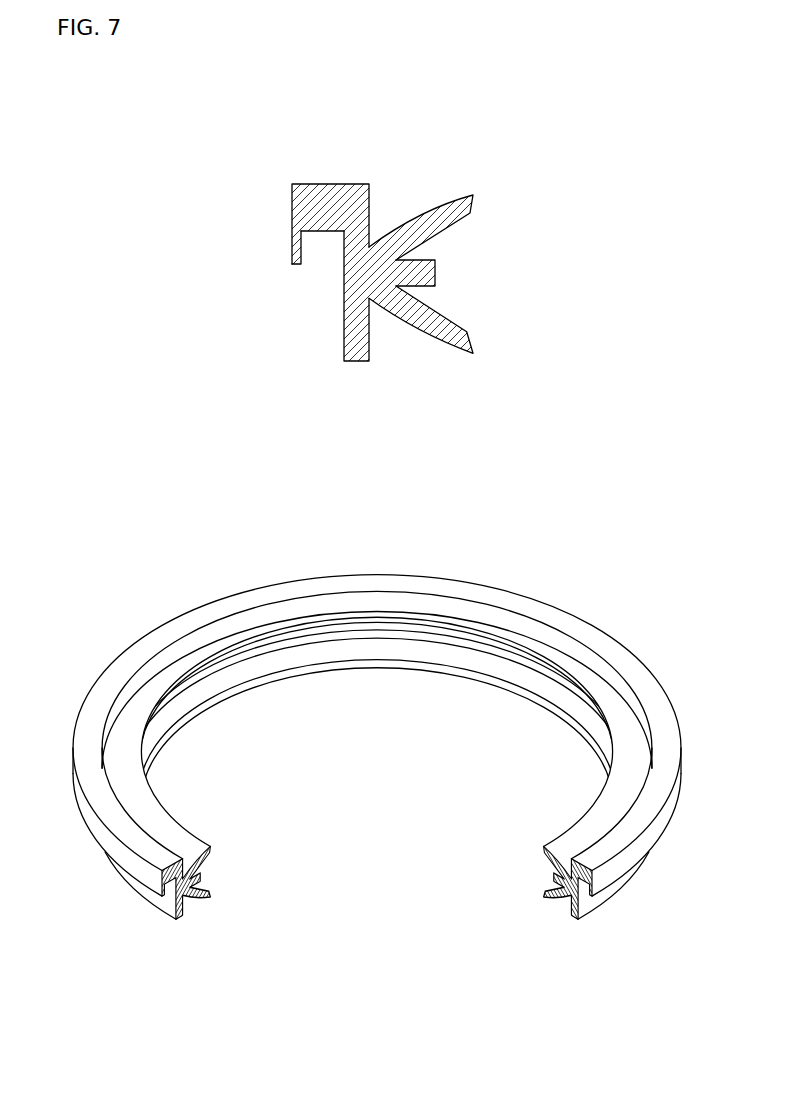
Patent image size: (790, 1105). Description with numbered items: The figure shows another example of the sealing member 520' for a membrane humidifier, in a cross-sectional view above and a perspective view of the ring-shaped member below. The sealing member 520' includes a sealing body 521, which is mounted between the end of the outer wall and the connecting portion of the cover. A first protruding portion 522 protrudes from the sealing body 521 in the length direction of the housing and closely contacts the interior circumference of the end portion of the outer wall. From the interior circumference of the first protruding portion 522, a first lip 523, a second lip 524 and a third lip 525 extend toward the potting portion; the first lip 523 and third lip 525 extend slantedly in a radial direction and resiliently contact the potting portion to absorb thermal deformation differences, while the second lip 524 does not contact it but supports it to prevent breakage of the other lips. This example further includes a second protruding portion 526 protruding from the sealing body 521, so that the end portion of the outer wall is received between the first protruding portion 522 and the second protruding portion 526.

The sealing member 520' is at (377, 526).
The sealing body 521 is at (328, 188).
The first protruding portion 522 is at (350, 337).
The first lip 523 is at (432, 213).
The second lip 524 is at (432, 272).
The third lip 525 is at (467, 337).
The second protruding portion 526 is at (295, 248).